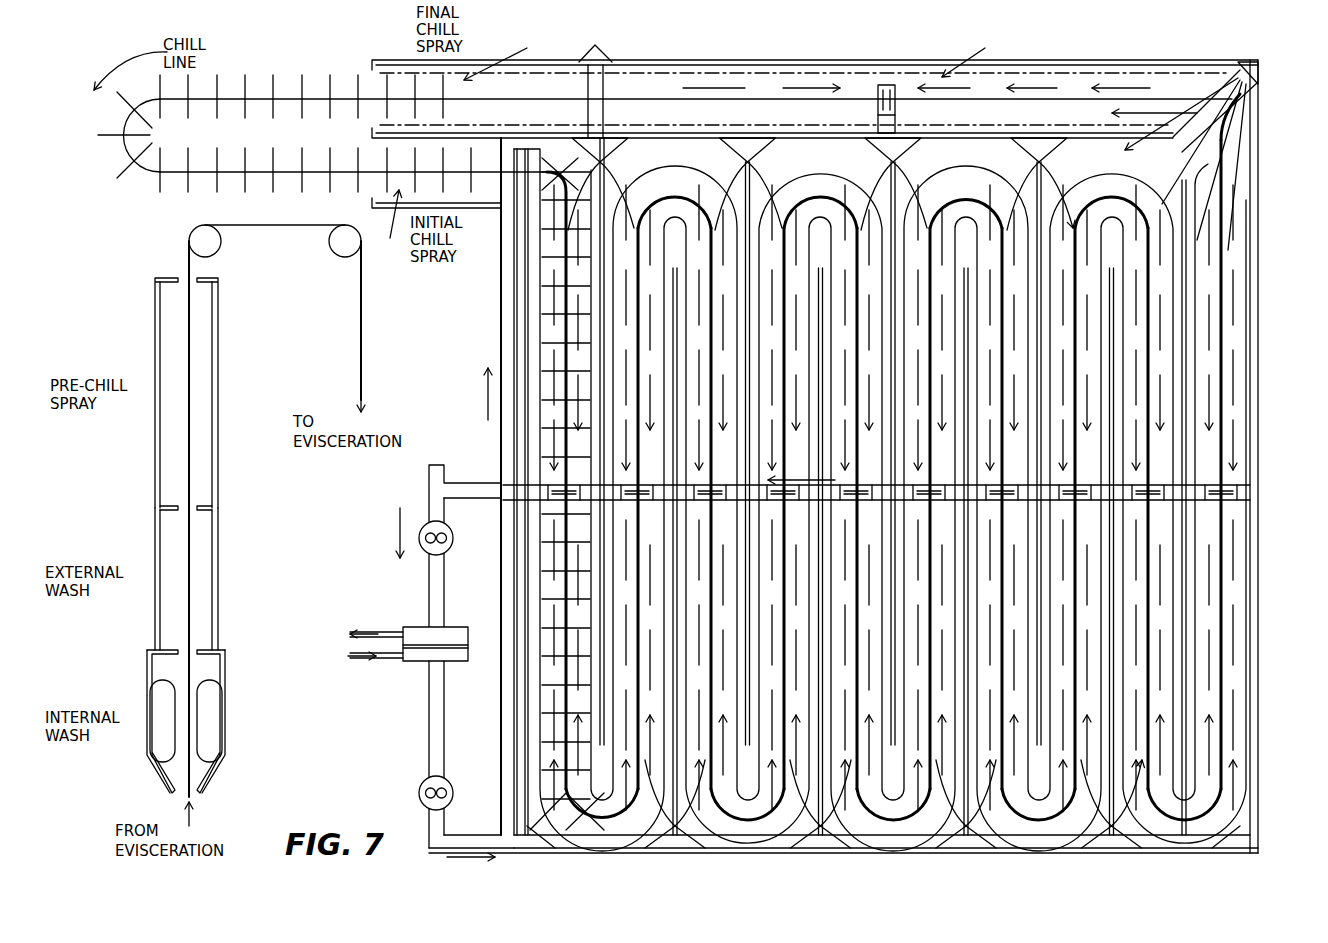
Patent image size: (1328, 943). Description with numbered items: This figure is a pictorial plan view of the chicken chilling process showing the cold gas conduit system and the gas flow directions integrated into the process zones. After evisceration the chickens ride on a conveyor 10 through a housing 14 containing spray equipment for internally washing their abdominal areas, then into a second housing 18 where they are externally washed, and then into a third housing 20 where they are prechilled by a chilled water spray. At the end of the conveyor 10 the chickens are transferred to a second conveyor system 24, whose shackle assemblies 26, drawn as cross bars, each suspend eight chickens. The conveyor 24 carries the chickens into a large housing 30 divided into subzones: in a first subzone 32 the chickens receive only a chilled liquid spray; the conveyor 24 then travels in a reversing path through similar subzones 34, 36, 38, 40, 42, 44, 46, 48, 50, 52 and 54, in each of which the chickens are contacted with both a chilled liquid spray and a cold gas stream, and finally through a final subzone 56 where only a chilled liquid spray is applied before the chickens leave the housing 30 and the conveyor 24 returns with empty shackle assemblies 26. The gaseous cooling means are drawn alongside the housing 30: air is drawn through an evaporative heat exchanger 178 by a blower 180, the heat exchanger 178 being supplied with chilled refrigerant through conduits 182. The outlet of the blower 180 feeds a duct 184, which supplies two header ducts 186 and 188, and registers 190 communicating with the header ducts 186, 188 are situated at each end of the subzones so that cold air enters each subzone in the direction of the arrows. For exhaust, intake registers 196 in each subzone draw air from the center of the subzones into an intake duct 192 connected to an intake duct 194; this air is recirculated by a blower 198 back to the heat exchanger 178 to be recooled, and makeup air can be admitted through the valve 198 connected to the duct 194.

The conveyor 10 is at (190, 322).
The housing 14 is at (147, 678).
The second housing 18 is at (155, 536).
The third housing 20 is at (155, 322).
The second conveyor system 24 is at (178, 175).
The shackle assemblies 26 is at (160, 185).
The large housing 30 is at (524, 298).
The first subzone 32 is at (436, 222).
The subzone 34 is at (578, 835).
The subzone 36 is at (647, 840).
The subzone 38 is at (704, 840).
The subzone 40 is at (803, 840).
The subzone 42 is at (847, 840).
The subzone 44 is at (950, 840).
The subzone 46 is at (995, 840).
The subzone 48 is at (1078, 840).
The subzone 50 is at (1127, 840).
The subzone 52 is at (1232, 840).
The subzone 54 is at (815, 90).
The final subzone 56 is at (538, 83).
The evaporative heat exchanger 178 is at (458, 628).
The blower 180 is at (419, 781).
The conduits 182 is at (388, 630).
The duct 184 is at (462, 835).
The header duct 186 is at (905, 848).
The header duct 188 is at (683, 135).
The registers 190 is at (612, 56).
The intake duct 192 is at (873, 136).
The intake duct 194 is at (484, 501).
The intake registers 196 is at (889, 85).
The blower 198 is at (446, 466).